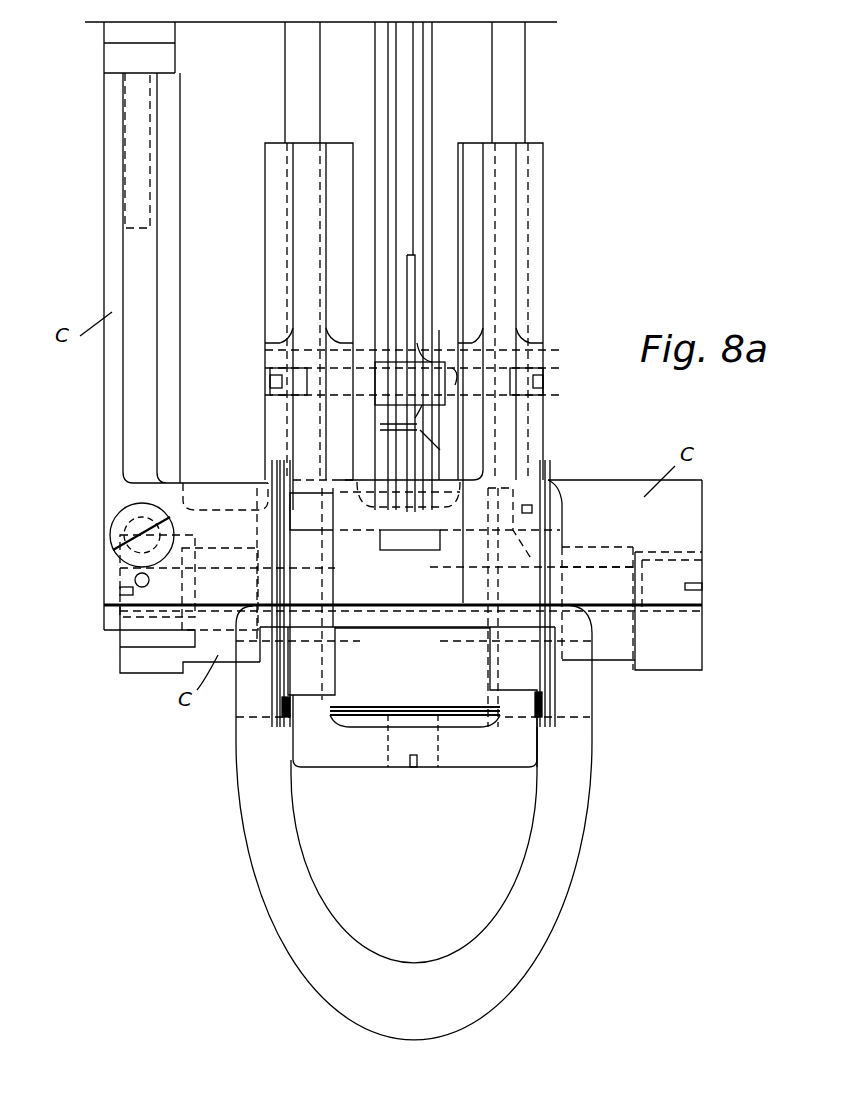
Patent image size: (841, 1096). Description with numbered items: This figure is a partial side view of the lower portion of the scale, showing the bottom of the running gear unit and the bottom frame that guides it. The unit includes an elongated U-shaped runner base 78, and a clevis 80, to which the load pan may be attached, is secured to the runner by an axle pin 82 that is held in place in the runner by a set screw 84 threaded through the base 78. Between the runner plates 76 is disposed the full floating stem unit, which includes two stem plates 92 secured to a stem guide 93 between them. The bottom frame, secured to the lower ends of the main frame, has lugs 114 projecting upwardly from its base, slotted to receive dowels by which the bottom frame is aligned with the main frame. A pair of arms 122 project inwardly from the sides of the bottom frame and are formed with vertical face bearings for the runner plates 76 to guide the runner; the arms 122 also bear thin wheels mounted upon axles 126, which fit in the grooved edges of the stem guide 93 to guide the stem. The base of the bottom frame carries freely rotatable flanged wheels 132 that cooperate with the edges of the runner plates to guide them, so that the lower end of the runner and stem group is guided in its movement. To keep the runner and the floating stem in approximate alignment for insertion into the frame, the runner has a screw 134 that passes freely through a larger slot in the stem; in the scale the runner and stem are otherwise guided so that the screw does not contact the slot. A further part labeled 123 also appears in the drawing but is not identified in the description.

The lugs 114 is at (108, 217).
The runner plates 76 is at (298, 78).
The stem plates 92 is at (427, 72).
The stem guide 93 is at (405, 49).
The arms 122 is at (265, 249).
The pin 123 is at (416, 266).
The axles 126 is at (460, 385).
The screw 134 is at (475, 490).
The flanged wheels 132 is at (303, 683).
The axle pin 82 is at (412, 660).
The set screw 84 is at (388, 755).
The runner base 78 is at (467, 755).
The clevis 80 is at (558, 880).